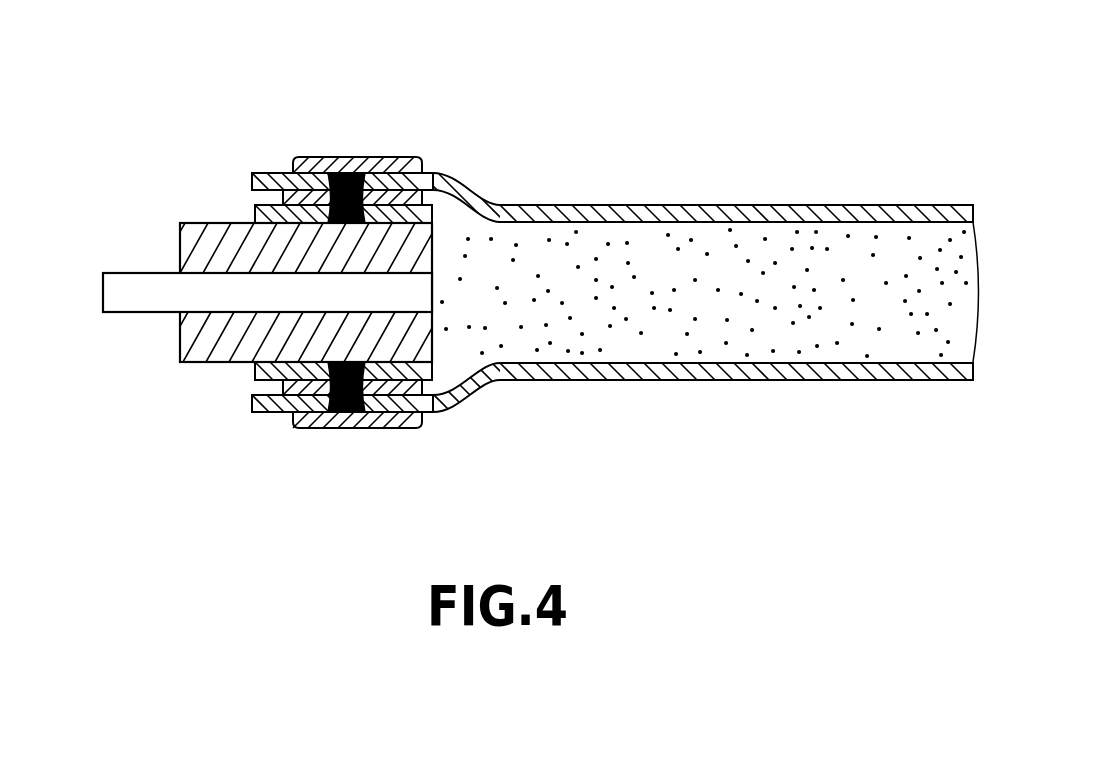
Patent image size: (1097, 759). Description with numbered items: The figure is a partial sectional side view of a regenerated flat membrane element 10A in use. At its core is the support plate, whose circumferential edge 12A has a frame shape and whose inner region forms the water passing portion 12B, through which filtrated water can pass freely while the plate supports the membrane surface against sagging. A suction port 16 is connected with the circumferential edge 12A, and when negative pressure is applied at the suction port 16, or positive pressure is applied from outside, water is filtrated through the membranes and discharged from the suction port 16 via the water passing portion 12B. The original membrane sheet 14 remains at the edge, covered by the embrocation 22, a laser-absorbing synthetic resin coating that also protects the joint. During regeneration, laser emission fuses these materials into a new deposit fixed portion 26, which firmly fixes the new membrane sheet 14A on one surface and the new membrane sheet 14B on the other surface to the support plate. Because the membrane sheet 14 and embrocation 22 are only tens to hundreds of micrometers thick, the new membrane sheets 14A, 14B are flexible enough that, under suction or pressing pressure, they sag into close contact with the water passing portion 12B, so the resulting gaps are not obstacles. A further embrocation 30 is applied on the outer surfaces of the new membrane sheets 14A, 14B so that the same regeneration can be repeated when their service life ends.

The regenerated flat membrane element 10A is at (731, 123).
The circumferential edge 12A is at (218, 352).
The water passing portion 12B is at (673, 350).
The membrane sheet 14 is at (255, 212).
The new membrane sheet 14A is at (852, 370).
The new membrane sheet 14B is at (850, 205).
The suction port 16 is at (138, 290).
The embrocation 22 is at (252, 192).
The new deposit fixed portion 26 is at (370, 173).
The embrocation 30 is at (322, 163).